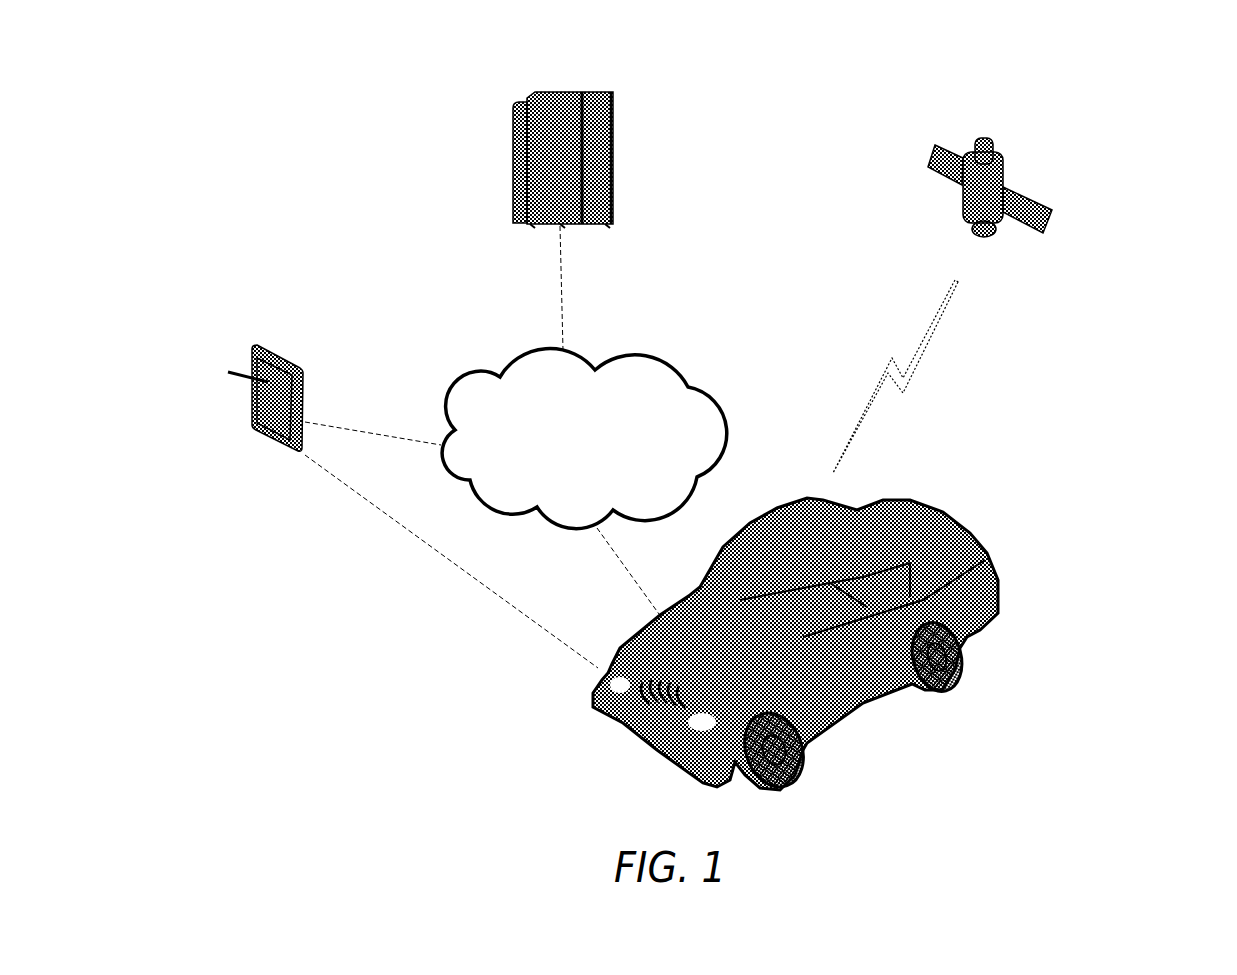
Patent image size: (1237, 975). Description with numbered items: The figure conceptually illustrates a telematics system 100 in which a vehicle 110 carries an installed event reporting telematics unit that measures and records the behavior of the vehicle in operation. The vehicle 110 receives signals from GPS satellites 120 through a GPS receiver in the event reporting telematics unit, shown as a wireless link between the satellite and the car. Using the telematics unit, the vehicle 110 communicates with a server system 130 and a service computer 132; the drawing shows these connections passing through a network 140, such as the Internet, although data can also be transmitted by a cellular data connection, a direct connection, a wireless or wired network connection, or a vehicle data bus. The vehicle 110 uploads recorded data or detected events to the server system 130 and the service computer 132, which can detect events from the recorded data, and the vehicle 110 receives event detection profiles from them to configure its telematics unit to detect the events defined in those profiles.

The telematics system 100 is at (1113, 113).
The vehicle 110 is at (997, 553).
The GPS satellites 120 is at (928, 170).
The server system 130 is at (512, 162).
The service computer 132 is at (252, 352).
The network 140 is at (638, 352).